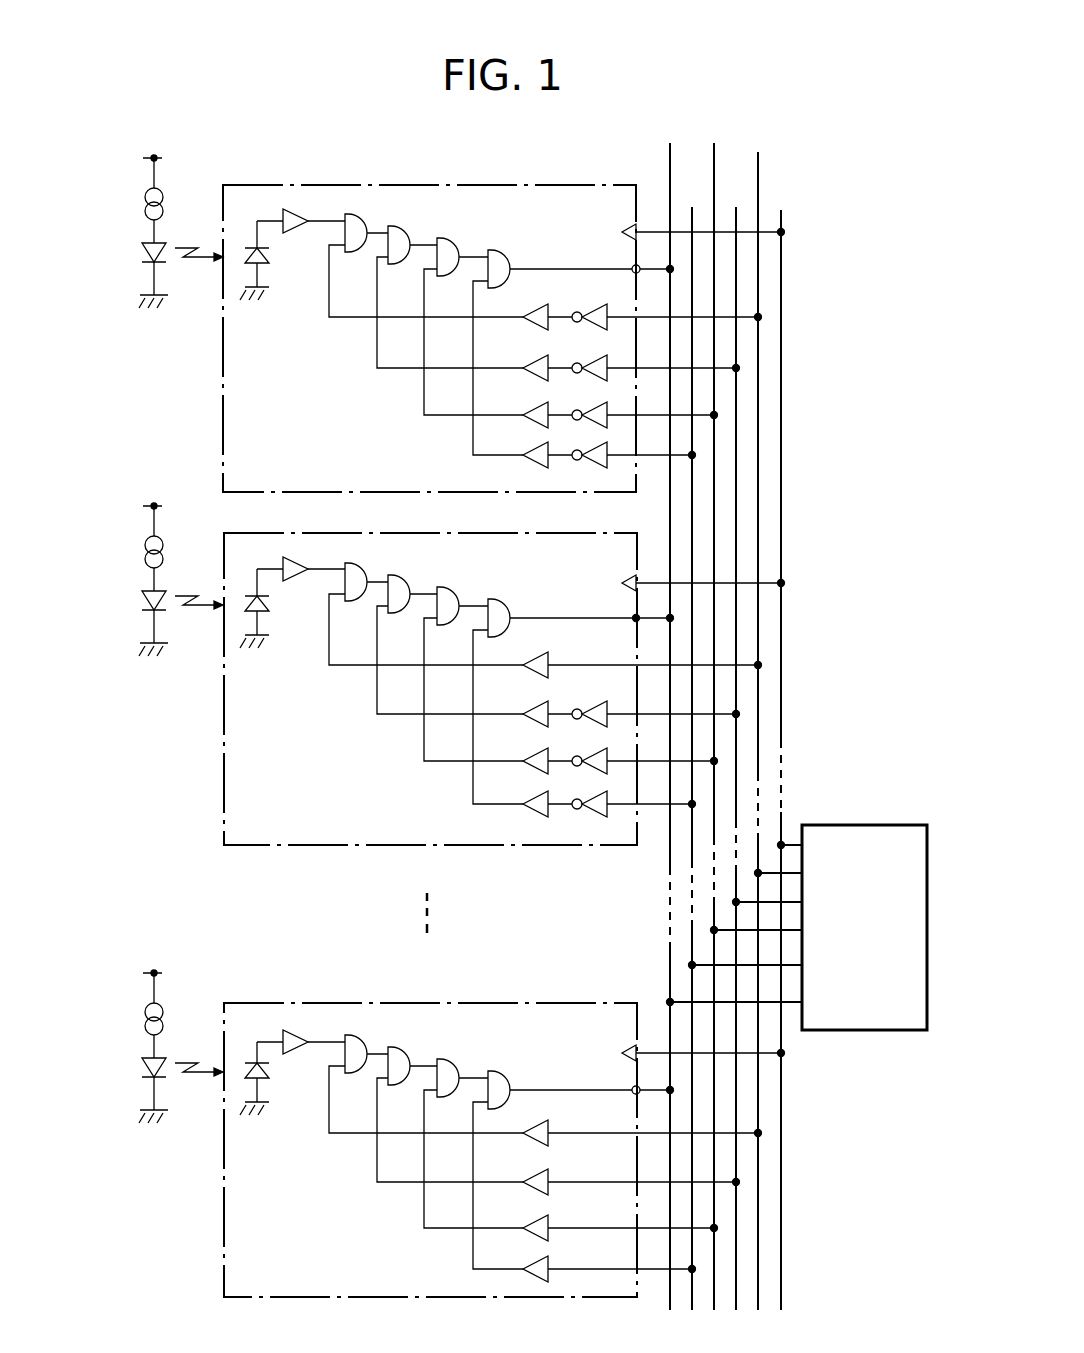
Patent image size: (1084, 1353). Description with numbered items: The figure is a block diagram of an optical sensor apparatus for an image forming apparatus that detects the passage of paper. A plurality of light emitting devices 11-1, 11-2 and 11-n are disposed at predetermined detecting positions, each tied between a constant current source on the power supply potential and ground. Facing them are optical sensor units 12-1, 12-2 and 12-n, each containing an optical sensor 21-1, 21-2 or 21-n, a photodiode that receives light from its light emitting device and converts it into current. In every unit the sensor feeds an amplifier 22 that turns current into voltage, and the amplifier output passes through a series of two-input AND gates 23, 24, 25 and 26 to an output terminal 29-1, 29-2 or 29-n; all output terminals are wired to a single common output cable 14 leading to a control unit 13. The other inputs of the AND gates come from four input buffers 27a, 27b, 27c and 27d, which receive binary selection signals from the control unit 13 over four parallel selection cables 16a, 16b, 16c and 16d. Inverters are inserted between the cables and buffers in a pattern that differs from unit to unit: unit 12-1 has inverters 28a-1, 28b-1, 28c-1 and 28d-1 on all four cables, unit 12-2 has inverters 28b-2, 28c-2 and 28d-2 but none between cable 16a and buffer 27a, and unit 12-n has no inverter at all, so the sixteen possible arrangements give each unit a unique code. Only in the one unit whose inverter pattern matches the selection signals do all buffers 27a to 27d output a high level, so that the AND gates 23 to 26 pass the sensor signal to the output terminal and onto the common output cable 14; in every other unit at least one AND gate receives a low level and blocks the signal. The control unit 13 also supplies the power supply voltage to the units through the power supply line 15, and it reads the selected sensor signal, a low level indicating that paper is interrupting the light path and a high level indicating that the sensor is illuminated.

The light emitting device 11-1 is at (144, 248).
The light emitting device 11-2 is at (144, 608).
The light emitting device 11-n is at (144, 1072).
The optical sensor unit 12-1 is at (272, 185).
The optical sensor unit 12-2 is at (272, 533).
The optical sensor unit 12-n is at (283, 1003).
The control unit 13 is at (866, 825).
The common output cable 14 is at (670, 948).
The power supply line 15 is at (781, 463).
The selection cable 16a is at (759, 571).
The selection cable 16b is at (736, 553).
The selection cable 16c is at (714, 538).
The selection cable 16d is at (692, 508).
The optical sensor 21-1 is at (268, 256).
The optical sensor 21-2 is at (268, 604).
The optical sensor 21-n is at (268, 1071).
The amplifier 22 is at (318, 212).
The AND gate 23 is at (358, 214).
The AND gate 24 is at (408, 228).
The AND gate 25 is at (458, 240).
The AND gate 26 is at (508, 255).
The input buffer 27a is at (524, 328).
The input buffer 27b is at (524, 379).
The input buffer 27c is at (524, 423).
The input buffer 27d is at (523, 460).
The inverter 28a-1 is at (587, 310).
The inverter 28b-1 is at (586, 364).
The inverter 28c-1 is at (586, 412).
The inverter 28d-1 is at (586, 453).
The inverter 28b-2 is at (587, 706).
The inverter 28c-2 is at (586, 758).
The inverter 28d-2 is at (586, 801).
The output terminal 29-1 is at (634, 269).
The output terminal 29-2 is at (634, 619).
The output terminal 29-n is at (630, 1088).